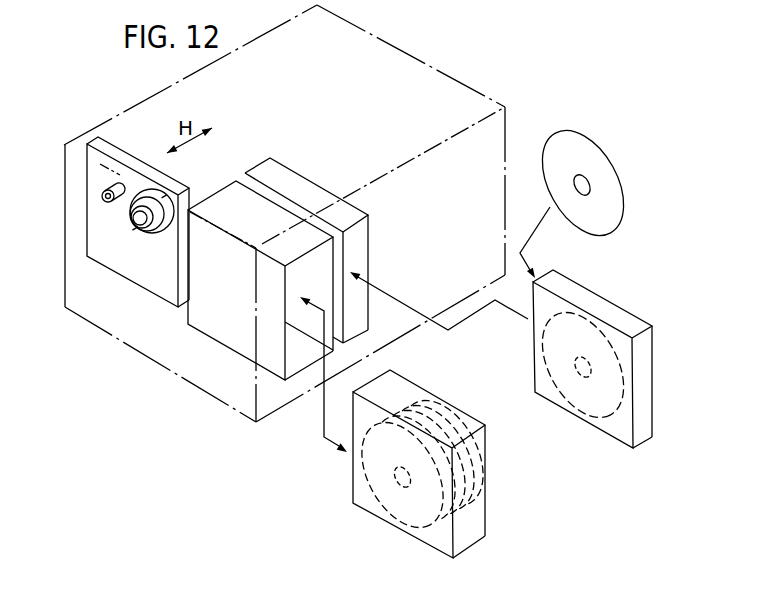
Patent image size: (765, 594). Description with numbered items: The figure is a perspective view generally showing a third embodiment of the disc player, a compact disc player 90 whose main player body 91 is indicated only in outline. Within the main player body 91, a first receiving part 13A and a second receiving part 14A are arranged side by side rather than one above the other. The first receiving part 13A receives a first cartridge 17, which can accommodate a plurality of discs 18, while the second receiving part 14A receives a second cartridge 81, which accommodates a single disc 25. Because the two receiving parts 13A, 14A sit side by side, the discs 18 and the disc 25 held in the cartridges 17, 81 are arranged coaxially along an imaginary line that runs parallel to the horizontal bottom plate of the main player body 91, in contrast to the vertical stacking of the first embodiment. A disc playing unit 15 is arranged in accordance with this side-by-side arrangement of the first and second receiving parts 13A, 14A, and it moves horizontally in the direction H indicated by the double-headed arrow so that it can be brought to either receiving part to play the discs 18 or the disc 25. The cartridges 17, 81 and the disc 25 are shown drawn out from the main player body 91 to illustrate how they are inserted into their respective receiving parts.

The compact disc player 90 is at (399, 25).
The main player body 91 is at (417, 58).
The disc playing unit 15 is at (90, 226).
The first receiving part 13A is at (207, 334).
The second receiving part 14A is at (312, 182).
The disc 25 is at (613, 178).
The second cartridge 81 is at (607, 304).
The first cartridge 17 is at (482, 447).
The discs 18 is at (366, 480).